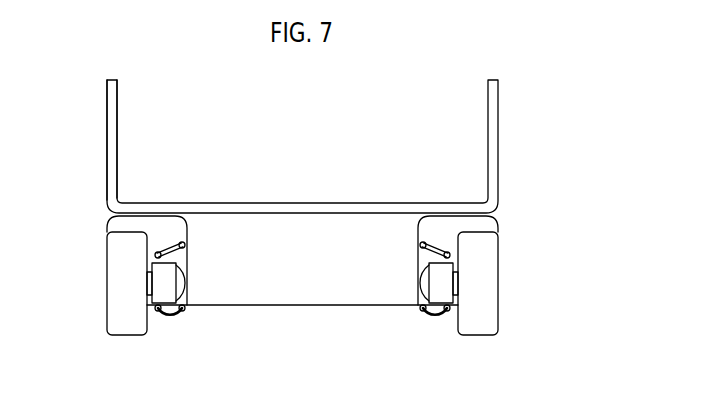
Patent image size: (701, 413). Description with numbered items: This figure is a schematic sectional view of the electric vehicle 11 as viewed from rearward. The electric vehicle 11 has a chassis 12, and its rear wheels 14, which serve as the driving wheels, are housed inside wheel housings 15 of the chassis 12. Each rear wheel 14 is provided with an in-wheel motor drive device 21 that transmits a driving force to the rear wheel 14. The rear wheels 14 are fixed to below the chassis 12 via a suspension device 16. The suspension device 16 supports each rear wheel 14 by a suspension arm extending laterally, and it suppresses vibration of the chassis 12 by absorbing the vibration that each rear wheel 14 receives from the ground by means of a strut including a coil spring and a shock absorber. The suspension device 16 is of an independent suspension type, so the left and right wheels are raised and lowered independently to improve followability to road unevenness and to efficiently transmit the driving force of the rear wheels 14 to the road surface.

The electric vehicle 11 is at (518, 128).
The chassis 12 is at (148, 137).
The rear wheels 14 is at (118, 296).
The wheel housings 15 is at (127, 223).
The suspension device 16 is at (305, 288).
The in-wheel motor drive device 21 is at (166, 290).